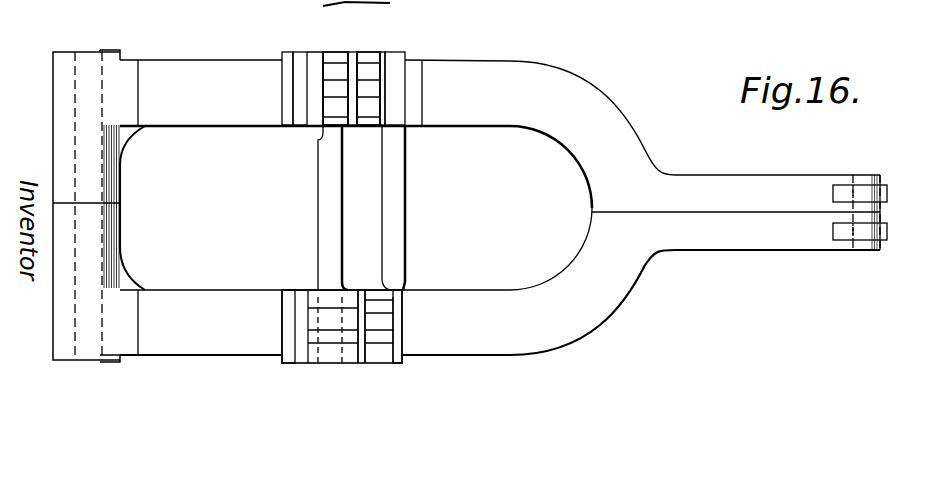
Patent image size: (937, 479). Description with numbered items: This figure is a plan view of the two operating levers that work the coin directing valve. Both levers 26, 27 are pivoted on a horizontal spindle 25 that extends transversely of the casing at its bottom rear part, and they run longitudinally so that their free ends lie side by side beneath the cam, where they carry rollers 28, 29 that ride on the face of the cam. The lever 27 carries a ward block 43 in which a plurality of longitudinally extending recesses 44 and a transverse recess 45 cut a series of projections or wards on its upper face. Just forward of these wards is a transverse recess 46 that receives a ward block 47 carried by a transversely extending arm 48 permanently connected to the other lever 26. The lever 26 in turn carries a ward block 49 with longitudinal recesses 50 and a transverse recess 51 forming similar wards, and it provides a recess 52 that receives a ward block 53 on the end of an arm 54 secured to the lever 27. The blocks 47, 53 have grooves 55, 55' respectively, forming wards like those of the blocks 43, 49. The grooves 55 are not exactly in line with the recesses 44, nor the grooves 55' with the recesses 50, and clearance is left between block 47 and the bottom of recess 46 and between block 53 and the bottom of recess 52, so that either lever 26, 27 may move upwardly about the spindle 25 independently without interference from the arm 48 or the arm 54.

The horizontal spindle 25 is at (73, 152).
The lever 26 is at (472, 113).
The lever 27 is at (472, 298).
The roller 28 is at (887, 192).
The roller 29 is at (887, 230).
The ward block 43 is at (290, 345).
The longitudinally extending recesses 44 is at (343, 325).
The transverse recess 45 is at (303, 293).
The transverse recess 46 is at (402, 287).
The ward block 47 is at (384, 356).
The transversely extending arm 48 is at (395, 211).
The ward block 49 is at (363, 62).
The longitudinal recesses 50 is at (368, 107).
The transverse recess 51 is at (284, 55).
The recess 52 is at (348, 60).
The ward block 53 is at (335, 70).
The arm 54 is at (325, 177).
The grooves 55 is at (418, 346).
The grooves 55' is at (300, 70).